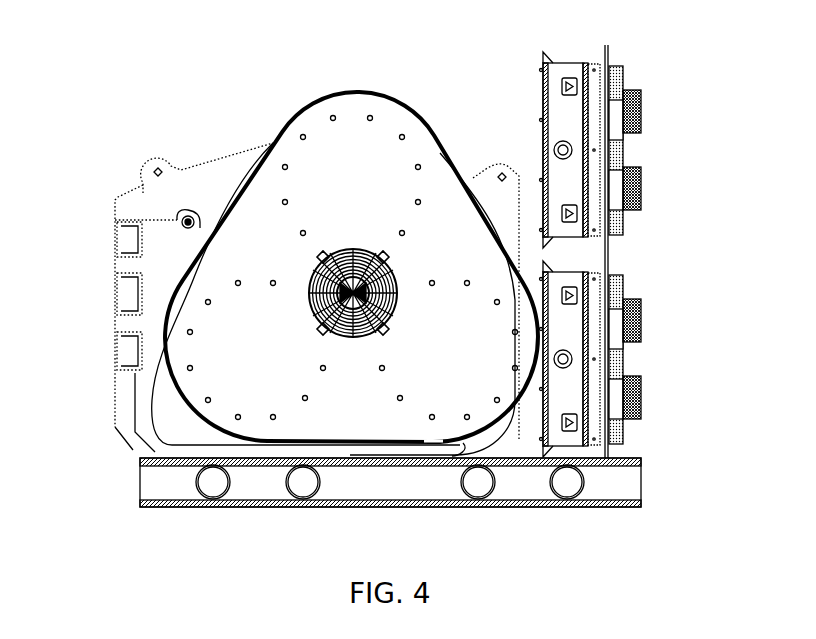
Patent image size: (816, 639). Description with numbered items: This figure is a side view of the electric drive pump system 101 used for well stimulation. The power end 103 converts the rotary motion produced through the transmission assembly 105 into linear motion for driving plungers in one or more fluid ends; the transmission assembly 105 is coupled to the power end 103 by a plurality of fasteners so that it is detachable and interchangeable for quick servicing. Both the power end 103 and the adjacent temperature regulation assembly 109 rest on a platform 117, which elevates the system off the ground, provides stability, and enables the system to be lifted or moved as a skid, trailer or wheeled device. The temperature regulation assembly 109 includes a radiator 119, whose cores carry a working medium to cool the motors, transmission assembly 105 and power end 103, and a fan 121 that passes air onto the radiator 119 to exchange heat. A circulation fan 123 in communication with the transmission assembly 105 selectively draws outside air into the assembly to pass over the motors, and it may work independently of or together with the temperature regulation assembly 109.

The electric drive pump system 101 is at (192, 84).
The power end 103 is at (149, 164).
The transmission assembly 105 is at (374, 205).
The temperature regulation assembly 109 is at (694, 168).
The platform 117 is at (142, 485).
The radiator 119 is at (552, 120).
The fan 121 is at (642, 320).
The circulation fan 123 is at (308, 305).